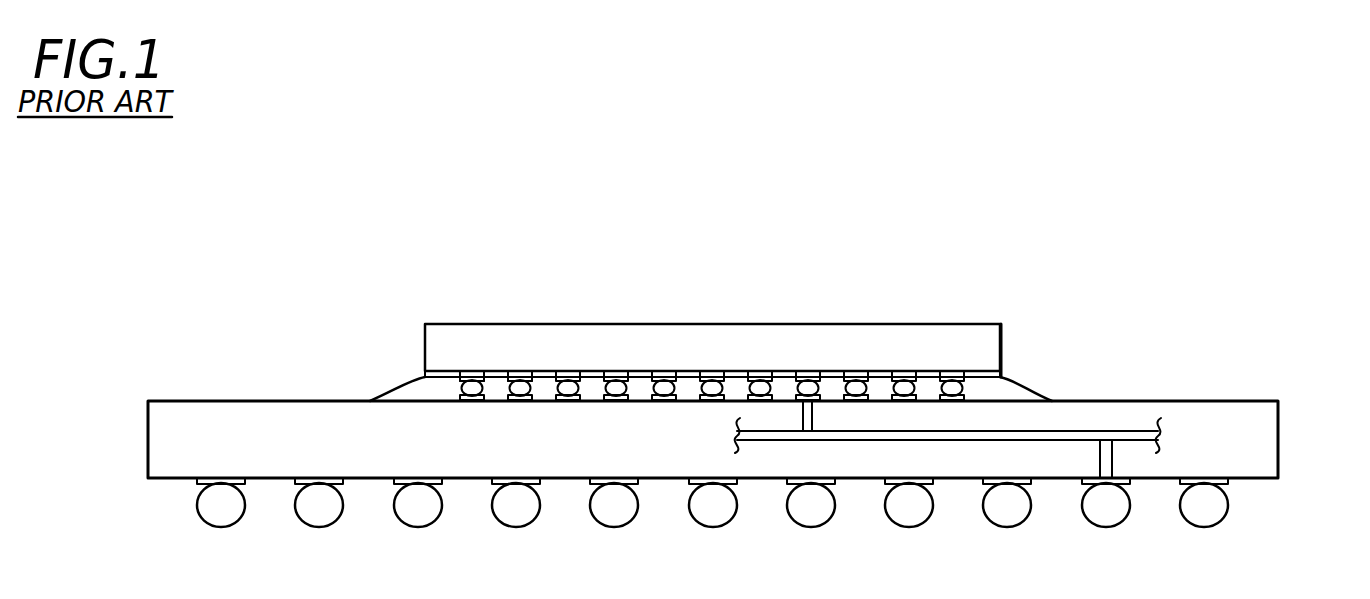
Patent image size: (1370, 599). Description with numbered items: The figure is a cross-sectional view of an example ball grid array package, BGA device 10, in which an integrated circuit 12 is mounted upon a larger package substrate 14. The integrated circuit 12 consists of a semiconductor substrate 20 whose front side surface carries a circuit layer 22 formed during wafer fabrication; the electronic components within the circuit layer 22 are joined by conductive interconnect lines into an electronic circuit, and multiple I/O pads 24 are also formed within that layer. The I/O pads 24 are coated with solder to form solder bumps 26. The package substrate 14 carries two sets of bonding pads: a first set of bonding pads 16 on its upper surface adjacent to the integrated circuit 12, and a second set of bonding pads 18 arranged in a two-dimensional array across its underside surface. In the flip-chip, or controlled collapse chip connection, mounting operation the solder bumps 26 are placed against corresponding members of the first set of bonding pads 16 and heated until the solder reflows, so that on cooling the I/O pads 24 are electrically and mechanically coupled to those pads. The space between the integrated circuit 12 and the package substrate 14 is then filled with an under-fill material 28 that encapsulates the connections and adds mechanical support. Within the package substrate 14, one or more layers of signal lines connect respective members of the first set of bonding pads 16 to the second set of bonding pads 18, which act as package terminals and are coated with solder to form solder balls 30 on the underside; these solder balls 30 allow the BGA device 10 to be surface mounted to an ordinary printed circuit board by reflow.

The BGA device 10 is at (1072, 244).
The integrated circuit 12 is at (725, 357).
The package substrate 14 is at (1278, 422).
The first set of bonding pads 16 is at (521, 401).
The second set of bonding pads 18 is at (315, 478).
The semiconductor substrate 20 is at (1002, 345).
The circuit layer 22 is at (1001, 372).
The I/O pads 24 is at (512, 371).
The solder bumps 26 is at (902, 385).
The under-fill material 28 is at (1032, 380).
The solder balls 30 is at (698, 517).